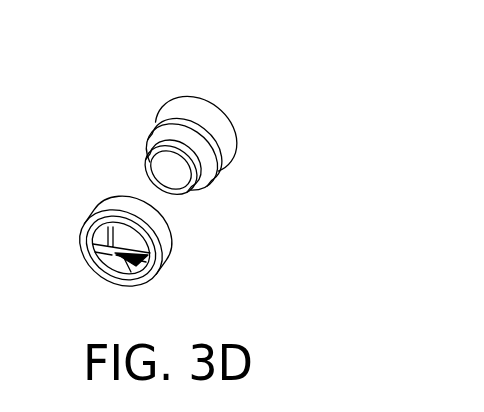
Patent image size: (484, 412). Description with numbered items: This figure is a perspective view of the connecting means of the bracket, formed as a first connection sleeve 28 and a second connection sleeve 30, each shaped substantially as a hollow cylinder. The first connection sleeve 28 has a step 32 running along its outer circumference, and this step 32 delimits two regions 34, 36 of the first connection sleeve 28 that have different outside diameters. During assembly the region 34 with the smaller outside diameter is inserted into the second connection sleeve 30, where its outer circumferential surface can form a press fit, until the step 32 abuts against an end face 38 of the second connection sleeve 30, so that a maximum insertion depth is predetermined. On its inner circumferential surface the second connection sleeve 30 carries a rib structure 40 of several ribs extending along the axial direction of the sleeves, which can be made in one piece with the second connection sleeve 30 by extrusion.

The first connection sleeve 28 is at (200, 116).
The second connection sleeve 30 is at (88, 258).
The step 32 is at (150, 130).
The region with smaller outside diameter 34 is at (205, 162).
The region with larger outside diameter 36 is at (215, 122).
The end face 38 is at (125, 224).
The rib structure 40 is at (130, 277).